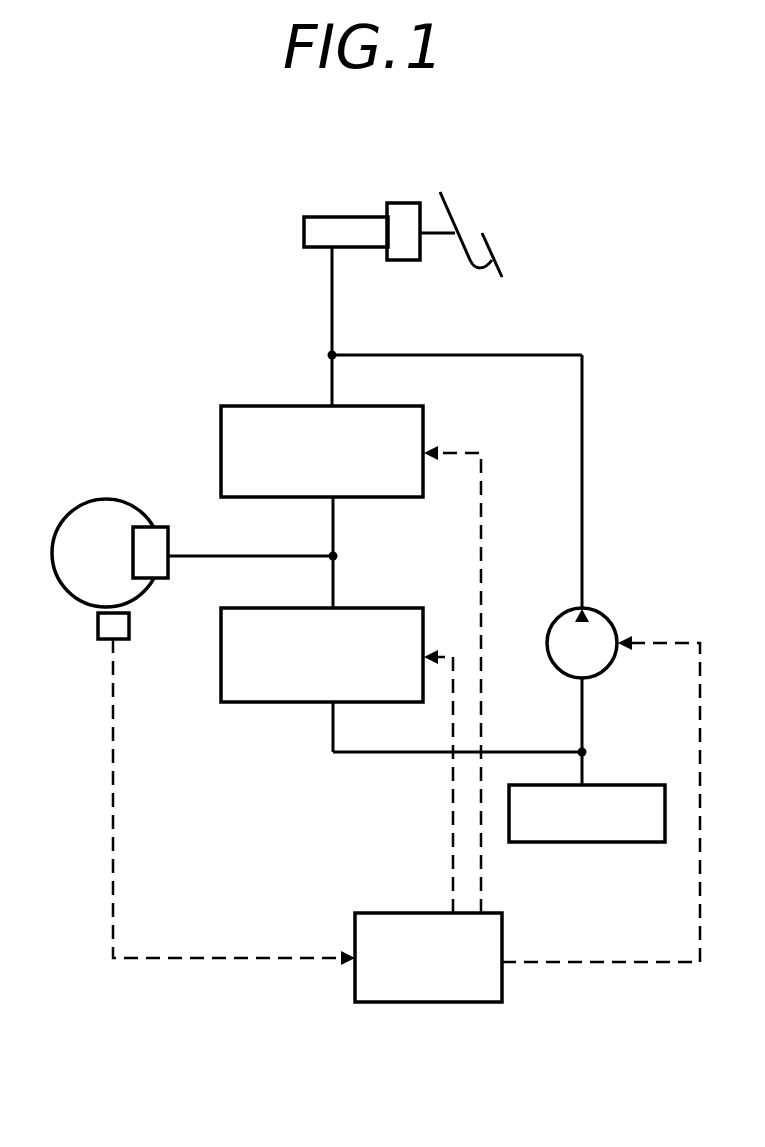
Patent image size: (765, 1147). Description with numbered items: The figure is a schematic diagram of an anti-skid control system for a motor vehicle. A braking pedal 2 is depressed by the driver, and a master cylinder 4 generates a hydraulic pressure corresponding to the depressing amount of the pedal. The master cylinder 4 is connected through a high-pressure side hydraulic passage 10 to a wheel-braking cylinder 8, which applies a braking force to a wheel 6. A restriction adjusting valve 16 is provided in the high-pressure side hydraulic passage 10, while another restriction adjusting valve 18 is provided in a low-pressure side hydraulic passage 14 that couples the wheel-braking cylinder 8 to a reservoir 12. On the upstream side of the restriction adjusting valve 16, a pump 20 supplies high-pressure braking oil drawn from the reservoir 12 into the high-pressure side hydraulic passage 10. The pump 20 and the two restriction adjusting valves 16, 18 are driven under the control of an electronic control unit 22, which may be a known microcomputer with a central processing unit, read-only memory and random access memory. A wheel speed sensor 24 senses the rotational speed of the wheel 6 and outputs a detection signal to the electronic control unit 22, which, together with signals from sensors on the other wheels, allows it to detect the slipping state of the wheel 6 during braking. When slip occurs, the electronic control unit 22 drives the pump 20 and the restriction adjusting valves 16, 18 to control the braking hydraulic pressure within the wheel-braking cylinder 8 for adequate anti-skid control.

The braking pedal 2 is at (445, 200).
The master cylinder 4 is at (332, 215).
The wheel 6 is at (108, 512).
The wheel-braking cylinder 8 is at (152, 545).
The high-pressure side hydraulic passage 10 is at (332, 325).
The reservoir 12 is at (648, 784).
The low-pressure side hydraulic passage 14 is at (370, 754).
The restriction adjusting valve 16 is at (398, 406).
The restriction adjusting valve 18 is at (410, 607).
The pump 20 is at (611, 617).
The electronic control unit 22 is at (378, 912).
The wheel speed sensor 24 is at (98, 630).